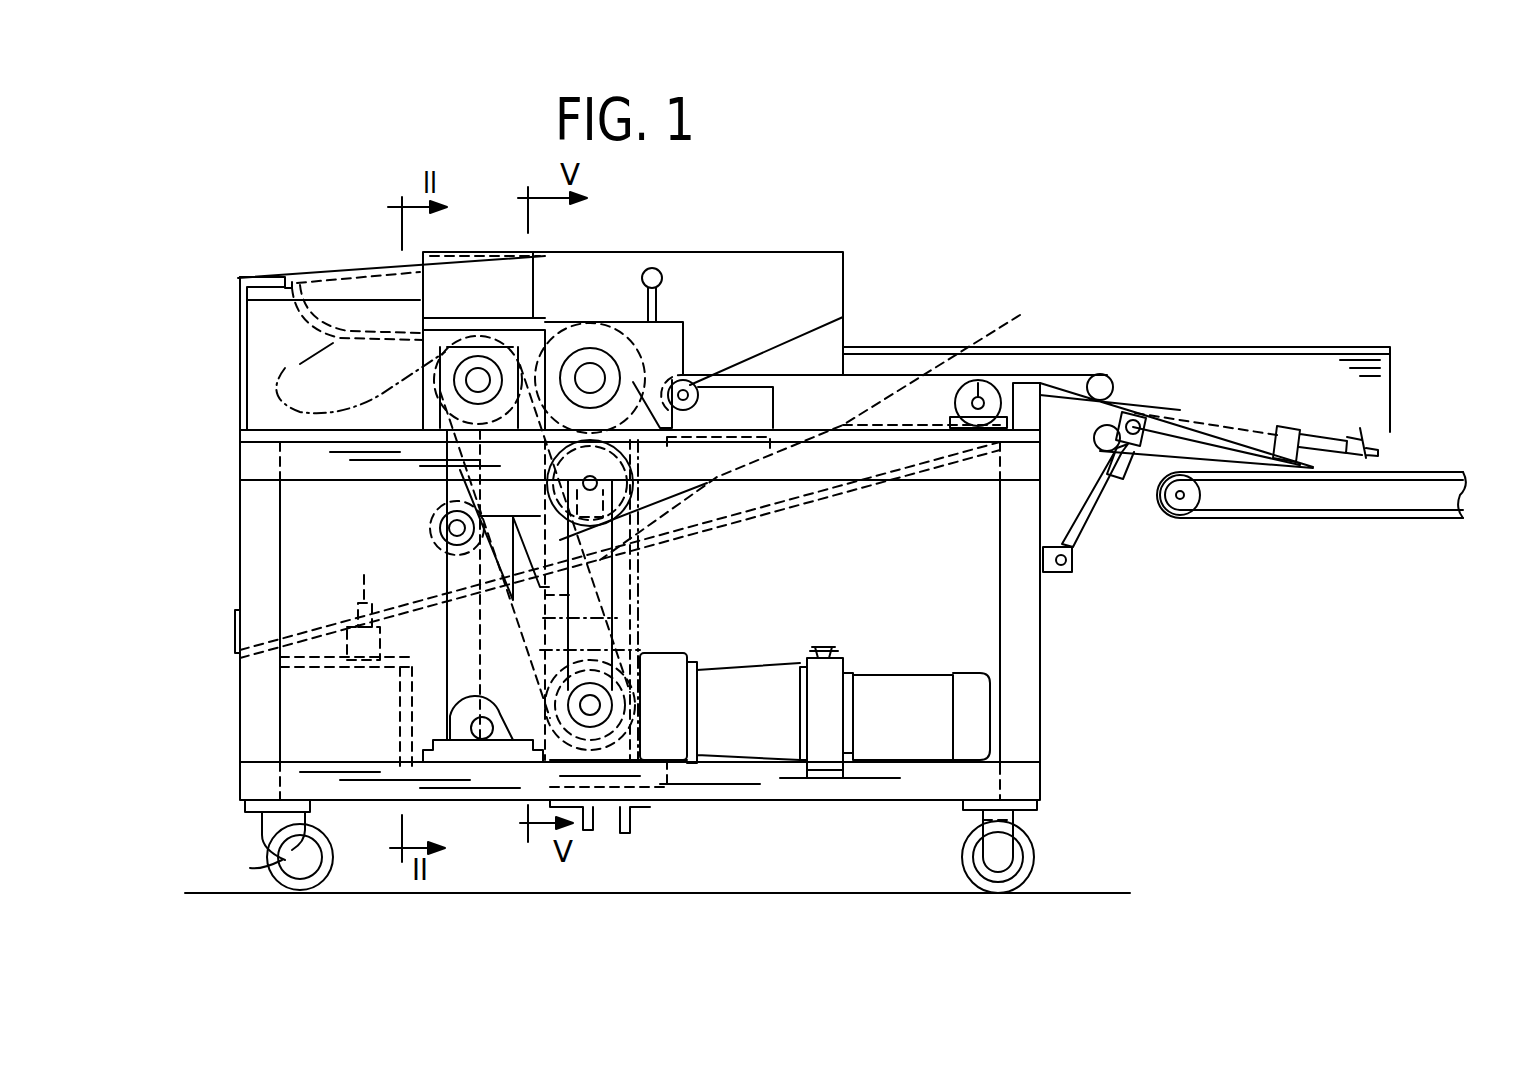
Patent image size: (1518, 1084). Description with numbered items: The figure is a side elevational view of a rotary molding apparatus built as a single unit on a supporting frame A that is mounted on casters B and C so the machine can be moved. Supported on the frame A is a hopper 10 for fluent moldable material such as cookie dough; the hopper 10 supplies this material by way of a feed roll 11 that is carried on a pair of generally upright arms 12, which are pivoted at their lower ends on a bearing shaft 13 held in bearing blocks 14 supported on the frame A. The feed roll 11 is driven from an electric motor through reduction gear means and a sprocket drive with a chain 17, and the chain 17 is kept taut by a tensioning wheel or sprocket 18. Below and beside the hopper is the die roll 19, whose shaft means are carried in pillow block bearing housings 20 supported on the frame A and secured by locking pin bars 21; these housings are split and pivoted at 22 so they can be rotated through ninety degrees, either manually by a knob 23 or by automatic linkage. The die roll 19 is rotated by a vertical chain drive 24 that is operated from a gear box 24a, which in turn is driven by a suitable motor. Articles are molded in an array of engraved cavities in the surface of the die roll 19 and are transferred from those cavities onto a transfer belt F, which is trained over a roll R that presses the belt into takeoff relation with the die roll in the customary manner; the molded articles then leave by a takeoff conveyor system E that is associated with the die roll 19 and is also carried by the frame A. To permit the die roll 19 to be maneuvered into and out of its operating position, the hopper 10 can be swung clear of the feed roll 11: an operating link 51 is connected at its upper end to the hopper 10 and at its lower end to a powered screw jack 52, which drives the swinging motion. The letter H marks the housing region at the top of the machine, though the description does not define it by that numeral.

The hopper 10 is at (300, 364).
The feed roll 11 is at (462, 378).
The upright arms 12 is at (482, 663).
The bearing shaft 13 is at (484, 738).
The bearing blocks 14 is at (498, 742).
The chain 17 is at (535, 665).
The tensioning wheel or sprocket 18 is at (438, 528).
The die roll 19 is at (592, 375).
The bearing housings 20 is at (663, 350).
The locking pin bars 21 is at (520, 330).
The pivot 22 is at (700, 385).
The knob 23 is at (660, 268).
The vertical chain drive 24 is at (640, 585).
The gear box 24a is at (773, 737).
The operating link 51 is at (376, 585).
The powered screw jack 52 is at (403, 629).
The supporting frame A is at (1025, 677).
The caster B is at (1034, 860).
The caster C is at (285, 858).
The molded article takeoff conveyor system E is at (1385, 472).
The transfer belt F is at (987, 372).
The housing H is at (737, 252).
The roll R is at (618, 467).